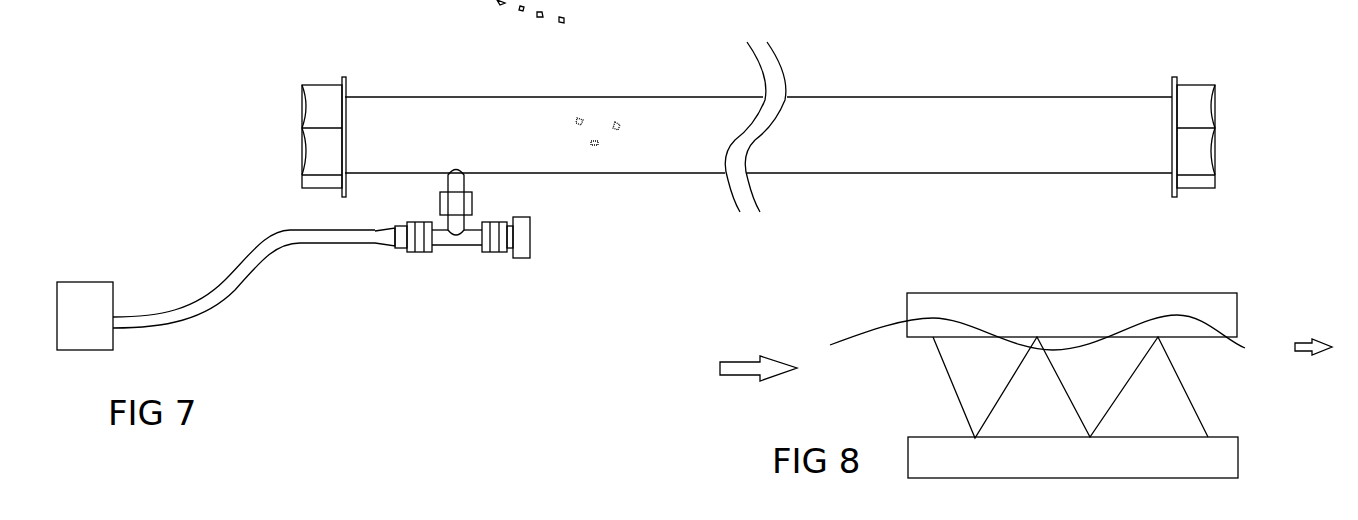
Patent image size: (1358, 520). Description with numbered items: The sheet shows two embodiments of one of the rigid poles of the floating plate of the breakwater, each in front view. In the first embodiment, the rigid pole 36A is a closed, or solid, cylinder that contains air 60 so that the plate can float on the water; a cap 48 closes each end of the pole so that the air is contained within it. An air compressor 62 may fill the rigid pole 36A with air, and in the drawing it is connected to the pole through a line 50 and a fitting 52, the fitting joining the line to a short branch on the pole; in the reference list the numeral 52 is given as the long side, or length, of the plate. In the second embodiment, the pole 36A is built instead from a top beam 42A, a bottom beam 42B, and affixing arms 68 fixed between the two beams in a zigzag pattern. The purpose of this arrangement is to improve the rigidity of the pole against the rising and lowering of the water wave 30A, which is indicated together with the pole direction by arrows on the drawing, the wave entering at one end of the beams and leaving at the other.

In FIG. 7, the rigid pole 36A is at (878, 120).
In FIG. 8, the rigid pole 36A is at (959, 348).
In FIG. 7, the cap of the pole 48 is at (312, 112).
In FIG. 7, the contained air 60 is at (597, 128).
In FIG. 7, the air compressor 62 is at (97, 305).
In FIG. 7, the tubing 50 is at (280, 237).
In FIG. 7, the long side of the plate 52 is at (523, 238).
In FIG. 8, the top beam 42A is at (985, 310).
In FIG. 8, the bottom beam 42B is at (943, 452).
In FIG. 8, the affixing arm 68 is at (950, 382).
In FIG. 8, the water wave 30A is at (1289, 347).